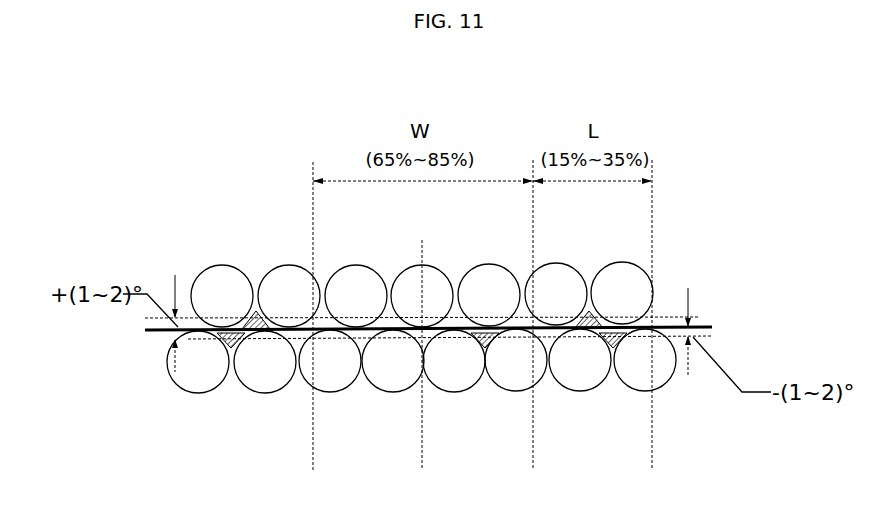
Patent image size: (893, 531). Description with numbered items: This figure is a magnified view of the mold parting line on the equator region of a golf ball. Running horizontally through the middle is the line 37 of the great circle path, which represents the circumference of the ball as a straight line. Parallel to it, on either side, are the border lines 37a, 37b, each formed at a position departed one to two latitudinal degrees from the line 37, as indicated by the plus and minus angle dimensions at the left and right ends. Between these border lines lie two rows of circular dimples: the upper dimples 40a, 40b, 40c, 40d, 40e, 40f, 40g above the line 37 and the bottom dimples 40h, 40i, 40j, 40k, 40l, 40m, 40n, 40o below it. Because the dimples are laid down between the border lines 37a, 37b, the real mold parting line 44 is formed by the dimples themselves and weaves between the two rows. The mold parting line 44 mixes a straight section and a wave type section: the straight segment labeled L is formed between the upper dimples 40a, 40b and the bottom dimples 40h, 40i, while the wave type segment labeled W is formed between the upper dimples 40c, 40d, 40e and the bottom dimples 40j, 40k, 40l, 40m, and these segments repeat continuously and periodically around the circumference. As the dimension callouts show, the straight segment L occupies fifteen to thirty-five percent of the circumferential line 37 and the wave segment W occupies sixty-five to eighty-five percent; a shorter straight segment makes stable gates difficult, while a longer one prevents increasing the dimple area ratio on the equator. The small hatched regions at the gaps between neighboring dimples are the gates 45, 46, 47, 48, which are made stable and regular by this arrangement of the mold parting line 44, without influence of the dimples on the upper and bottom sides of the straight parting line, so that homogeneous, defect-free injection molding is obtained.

The great circle path line 37 is at (703, 326).
The upper border line 37a is at (658, 315).
The lower border line 37b is at (708, 335).
The upper dimple 40a is at (622, 293).
The upper dimple 40b is at (556, 294).
The upper dimple 40c is at (489, 295).
The upper dimple 40d is at (422, 296).
The upper dimple 40e is at (356, 296).
The upper dimple 40f is at (289, 296).
The upper dimple 40g is at (222, 296).
The bottom dimple 40h is at (645, 360).
The bottom dimple 40i is at (580, 360).
The bottom dimple 40j is at (516, 360).
The bottom dimple 40k is at (454, 361).
The bottom dimple 40l is at (393, 361).
The bottom dimple 40m is at (330, 361).
The bottom dimple 40n is at (265, 362).
The bottom dimple 40o is at (198, 362).
The mold parting line 44 is at (521, 379).
The gate 45 is at (545, 273).
The gate 46 is at (298, 273).
The gate 47 is at (652, 379).
The gate 48 is at (194, 380).